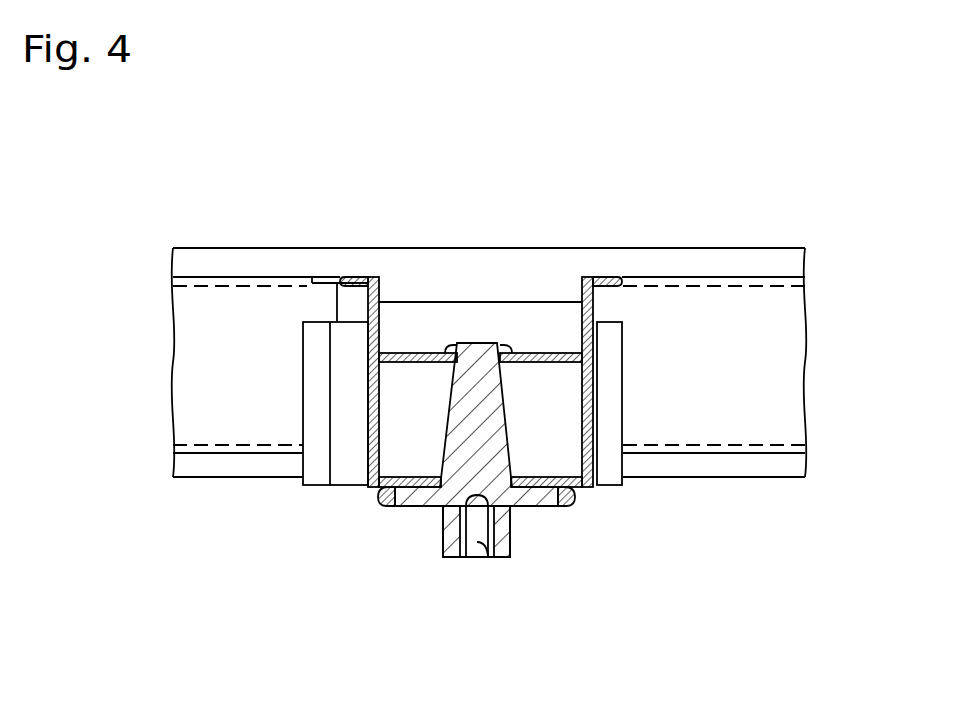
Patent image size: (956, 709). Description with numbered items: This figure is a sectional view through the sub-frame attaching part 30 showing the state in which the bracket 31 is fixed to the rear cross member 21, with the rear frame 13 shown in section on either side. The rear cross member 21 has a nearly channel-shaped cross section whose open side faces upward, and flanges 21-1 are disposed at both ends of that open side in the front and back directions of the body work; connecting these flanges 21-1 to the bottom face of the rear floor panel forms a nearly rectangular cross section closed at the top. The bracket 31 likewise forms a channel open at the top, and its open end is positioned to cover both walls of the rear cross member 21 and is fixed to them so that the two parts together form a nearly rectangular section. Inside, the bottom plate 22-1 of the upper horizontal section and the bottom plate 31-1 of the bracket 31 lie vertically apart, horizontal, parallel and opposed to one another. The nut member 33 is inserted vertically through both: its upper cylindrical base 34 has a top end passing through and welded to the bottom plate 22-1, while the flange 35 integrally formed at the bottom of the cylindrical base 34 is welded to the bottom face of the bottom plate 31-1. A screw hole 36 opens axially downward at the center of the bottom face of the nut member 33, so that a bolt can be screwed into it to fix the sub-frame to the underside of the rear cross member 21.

The rear frame 13 is at (782, 366).
The rear cross member 21 is at (600, 305).
The flange 21-1 is at (363, 275).
The bottom plate of the upper horizontal section 22-1 is at (547, 352).
The sub-frame attaching part 30 is at (273, 573).
The bracket 31 is at (600, 418).
The bottom plate of the bracket 31-1 is at (557, 508).
The nut member 33 is at (446, 563).
The cylindrical base 34 is at (477, 421).
The flange 35 is at (417, 506).
The screw hole 36 is at (483, 543).